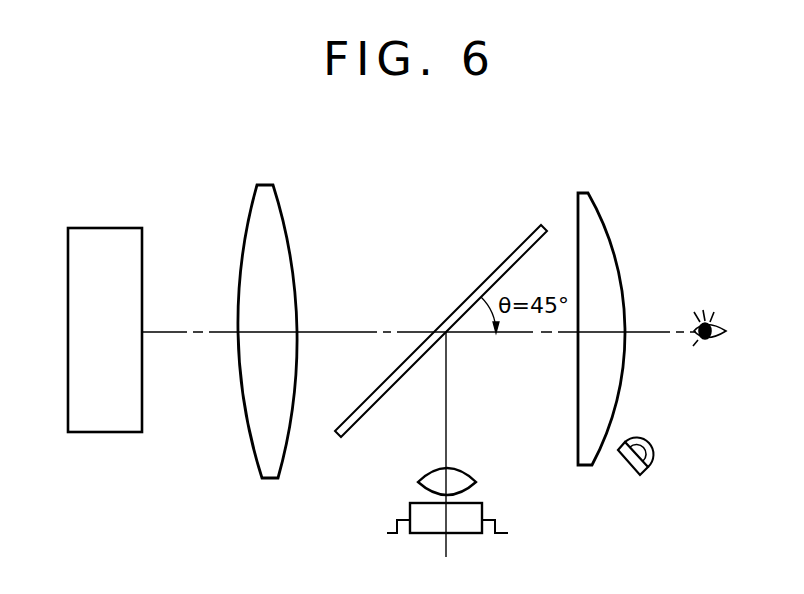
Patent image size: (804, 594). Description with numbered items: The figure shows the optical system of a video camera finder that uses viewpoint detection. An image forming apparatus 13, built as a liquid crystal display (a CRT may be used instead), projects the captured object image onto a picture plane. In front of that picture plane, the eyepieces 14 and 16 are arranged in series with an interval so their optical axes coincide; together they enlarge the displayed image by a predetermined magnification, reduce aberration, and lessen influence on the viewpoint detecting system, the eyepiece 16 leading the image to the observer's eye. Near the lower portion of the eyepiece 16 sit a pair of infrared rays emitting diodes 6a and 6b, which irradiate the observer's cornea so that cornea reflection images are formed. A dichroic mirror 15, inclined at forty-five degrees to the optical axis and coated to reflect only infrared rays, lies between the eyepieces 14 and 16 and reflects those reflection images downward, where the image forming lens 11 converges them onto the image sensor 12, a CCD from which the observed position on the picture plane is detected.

The infrared rays emitting diode 6a is at (646, 466).
The infrared rays emitting diode 6b is at (640, 440).
The image forming lens 11 is at (460, 470).
The image sensor 12 is at (408, 505).
The image forming apparatus 13 is at (117, 228).
The eyepiece 14 is at (281, 211).
The dichroic mirror 15 is at (502, 255).
The eyepiece 16 is at (602, 220).